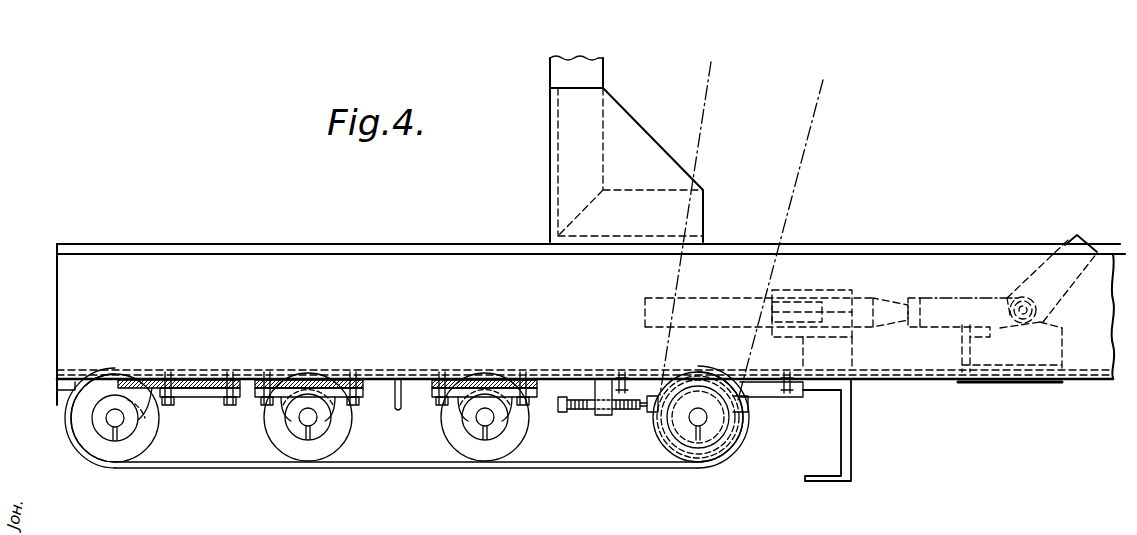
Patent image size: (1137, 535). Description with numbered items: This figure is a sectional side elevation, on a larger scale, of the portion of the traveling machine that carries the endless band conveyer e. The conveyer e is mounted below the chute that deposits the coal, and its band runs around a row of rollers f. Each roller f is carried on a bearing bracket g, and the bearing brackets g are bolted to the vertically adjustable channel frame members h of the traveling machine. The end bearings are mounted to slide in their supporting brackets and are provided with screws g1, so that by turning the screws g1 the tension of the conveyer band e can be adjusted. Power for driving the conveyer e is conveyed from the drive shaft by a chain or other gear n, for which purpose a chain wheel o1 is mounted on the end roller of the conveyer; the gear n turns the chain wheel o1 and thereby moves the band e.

The endless band conveyer e is at (213, 462).
The rollers f is at (80, 432).
The bearing brackets g is at (103, 428).
The screws g1 is at (585, 412).
The channel frame members h is at (216, 378).
The chain gear n is at (802, 167).
The chain wheel o1 is at (703, 446).